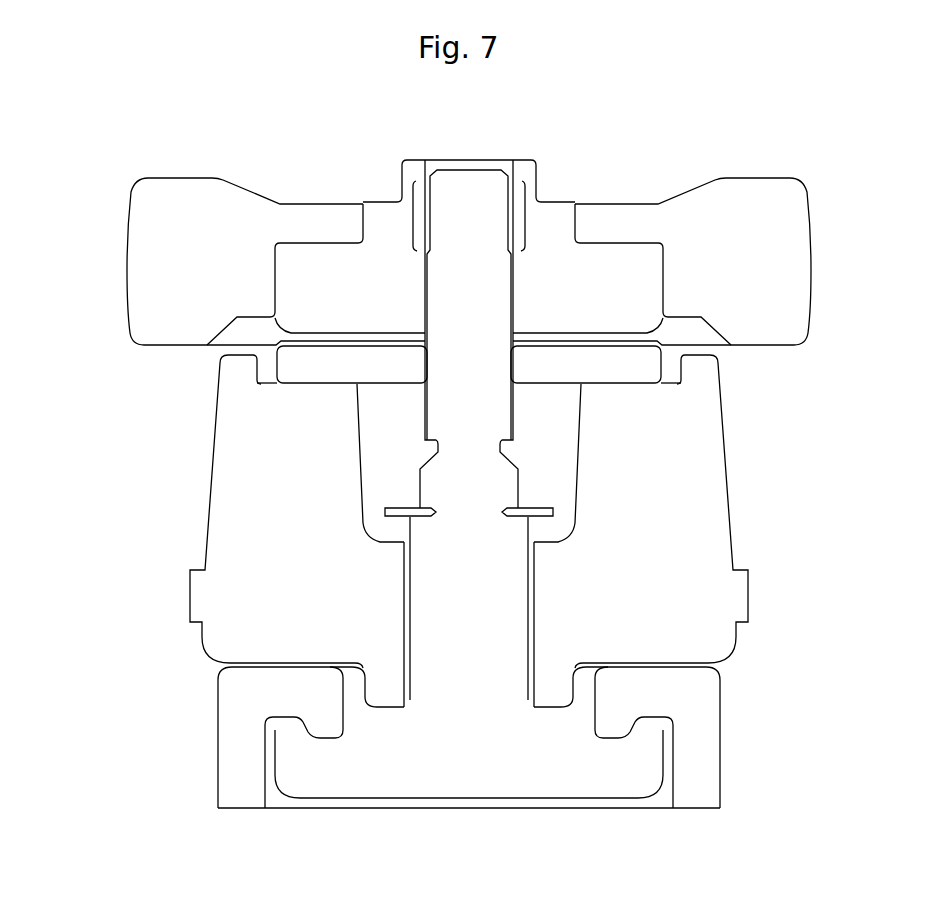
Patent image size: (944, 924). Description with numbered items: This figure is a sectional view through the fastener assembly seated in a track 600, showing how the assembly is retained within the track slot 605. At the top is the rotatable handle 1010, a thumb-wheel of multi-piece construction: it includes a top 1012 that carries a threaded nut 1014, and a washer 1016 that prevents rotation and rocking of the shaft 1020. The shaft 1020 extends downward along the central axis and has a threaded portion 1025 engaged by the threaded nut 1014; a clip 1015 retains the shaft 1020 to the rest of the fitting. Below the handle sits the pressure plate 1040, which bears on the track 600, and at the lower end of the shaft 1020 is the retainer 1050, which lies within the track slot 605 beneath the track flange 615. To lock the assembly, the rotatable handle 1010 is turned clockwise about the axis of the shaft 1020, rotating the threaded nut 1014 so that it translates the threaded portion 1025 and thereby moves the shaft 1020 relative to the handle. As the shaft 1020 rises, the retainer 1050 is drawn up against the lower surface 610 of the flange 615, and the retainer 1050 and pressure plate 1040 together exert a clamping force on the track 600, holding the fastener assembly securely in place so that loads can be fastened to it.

The rotatable handle 1010 is at (113, 175).
The top 1012 is at (748, 187).
The threaded nut 1014 is at (522, 164).
The washer 1016 is at (297, 367).
The shaft 1020 is at (490, 268).
The threaded portion 1025 is at (392, 216).
The clip 1015 is at (385, 518).
The pressure plate 1040 is at (708, 528).
The flange 615 is at (318, 698).
The track 600 is at (237, 793).
The lower surface 610 is at (313, 737).
The track slot 605 is at (360, 703).
The retainer 1050 is at (462, 770).